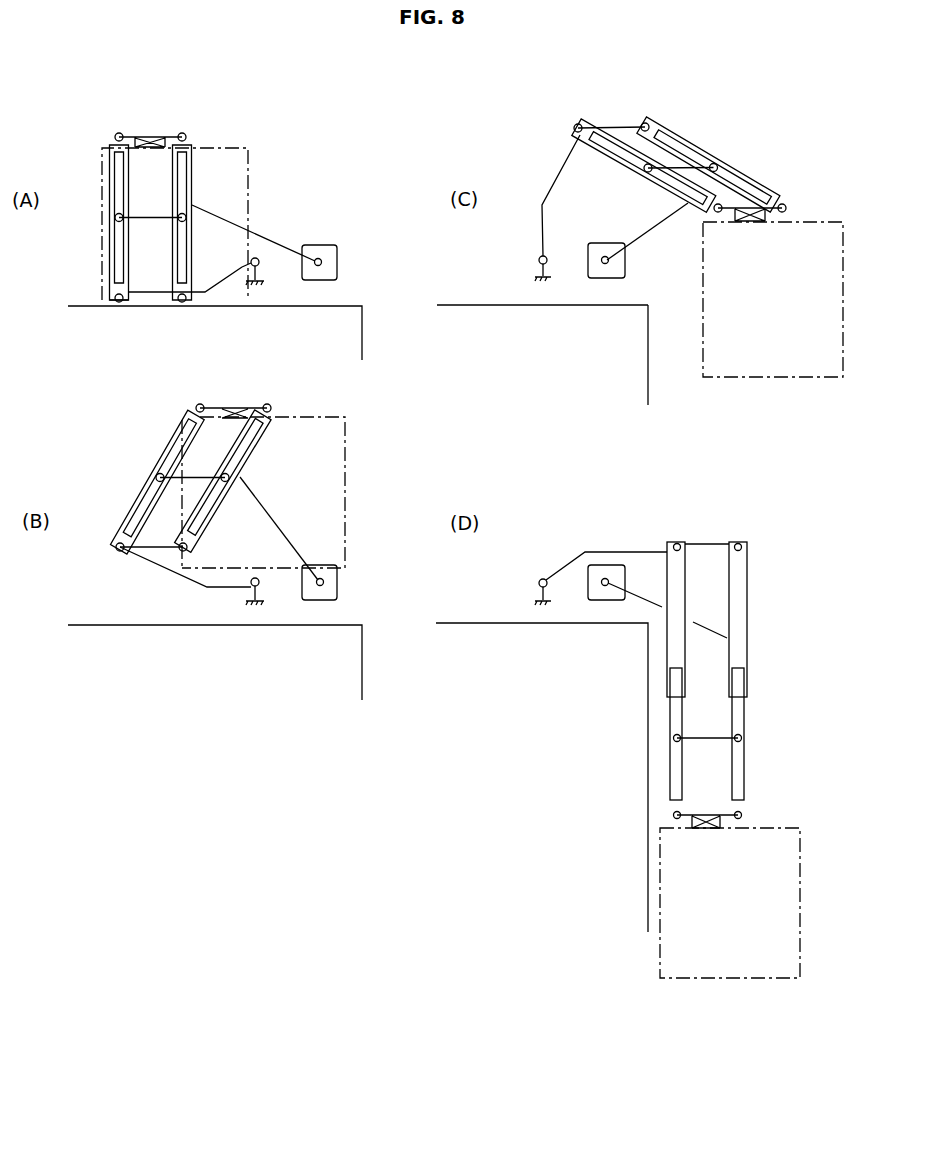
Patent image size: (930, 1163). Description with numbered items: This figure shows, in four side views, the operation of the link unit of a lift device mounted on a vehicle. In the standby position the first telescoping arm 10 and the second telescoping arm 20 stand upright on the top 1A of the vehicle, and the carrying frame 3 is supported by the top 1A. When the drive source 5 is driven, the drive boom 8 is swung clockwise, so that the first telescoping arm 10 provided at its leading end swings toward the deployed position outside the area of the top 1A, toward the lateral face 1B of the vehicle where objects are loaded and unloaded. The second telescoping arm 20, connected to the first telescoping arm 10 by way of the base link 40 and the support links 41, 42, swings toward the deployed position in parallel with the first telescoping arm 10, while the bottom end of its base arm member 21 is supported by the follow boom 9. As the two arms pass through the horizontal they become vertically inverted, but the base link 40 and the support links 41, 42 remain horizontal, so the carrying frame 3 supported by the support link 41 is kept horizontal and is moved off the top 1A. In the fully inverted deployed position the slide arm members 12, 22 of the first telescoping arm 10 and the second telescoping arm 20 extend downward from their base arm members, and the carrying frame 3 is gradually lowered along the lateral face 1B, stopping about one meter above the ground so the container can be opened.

The top of the vehicle 1A is at (473, 305).
The lateral face of the vehicle 1B is at (654, 390).
The carrying frame 3 is at (248, 148).
The drive source 5 is at (338, 262).
The drive boom 8 is at (273, 238).
The follow boom 9 is at (228, 282).
The first telescoping arm 10 is at (203, 128).
The slide arm member 12 is at (744, 769).
The second telescoping arm 20 is at (104, 128).
The base arm member 21 is at (106, 290).
The slide arm member 22 is at (108, 237).
The base link 40 is at (150, 302).
The support link 41 is at (150, 136).
The support link 42 is at (150, 215).